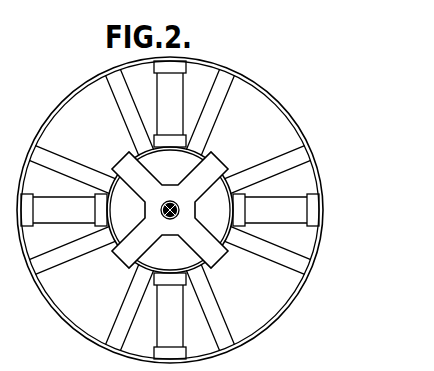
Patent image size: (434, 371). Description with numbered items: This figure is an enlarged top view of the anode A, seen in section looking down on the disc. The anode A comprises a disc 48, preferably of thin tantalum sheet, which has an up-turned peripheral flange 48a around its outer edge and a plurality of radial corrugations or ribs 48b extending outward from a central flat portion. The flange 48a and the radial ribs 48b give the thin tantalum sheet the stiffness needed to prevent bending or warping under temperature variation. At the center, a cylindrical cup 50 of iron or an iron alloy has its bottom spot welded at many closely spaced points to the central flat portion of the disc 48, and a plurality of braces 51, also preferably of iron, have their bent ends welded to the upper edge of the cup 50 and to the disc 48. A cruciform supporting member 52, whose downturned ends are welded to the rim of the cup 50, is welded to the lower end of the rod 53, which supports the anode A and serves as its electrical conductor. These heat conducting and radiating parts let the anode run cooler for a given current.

The anode A is at (177, 210).
The disc 48 is at (169, 209).
The up-turned peripheral flange 48a is at (338, 327).
The radial corrugations or ribs 48b is at (267, 255).
The cylindrical cup 50 is at (134, 272).
The braces 51 is at (275, 207).
The cruciform supporting member 52 is at (128, 187).
The rod 53 is at (168, 201).